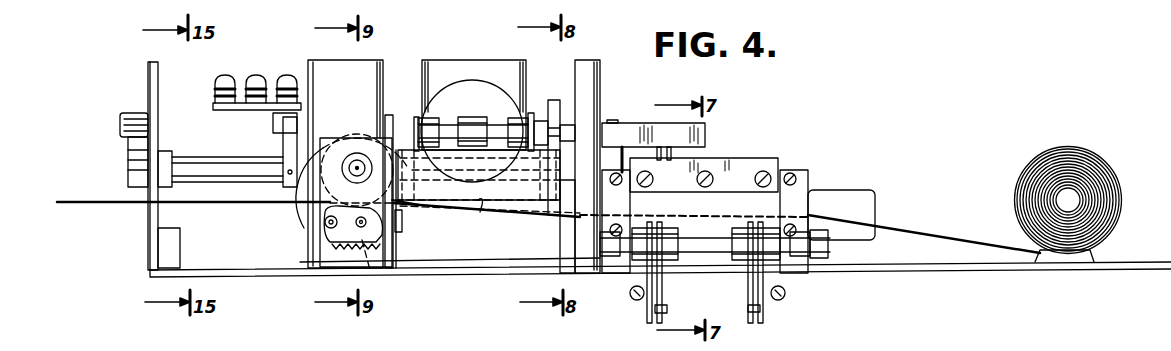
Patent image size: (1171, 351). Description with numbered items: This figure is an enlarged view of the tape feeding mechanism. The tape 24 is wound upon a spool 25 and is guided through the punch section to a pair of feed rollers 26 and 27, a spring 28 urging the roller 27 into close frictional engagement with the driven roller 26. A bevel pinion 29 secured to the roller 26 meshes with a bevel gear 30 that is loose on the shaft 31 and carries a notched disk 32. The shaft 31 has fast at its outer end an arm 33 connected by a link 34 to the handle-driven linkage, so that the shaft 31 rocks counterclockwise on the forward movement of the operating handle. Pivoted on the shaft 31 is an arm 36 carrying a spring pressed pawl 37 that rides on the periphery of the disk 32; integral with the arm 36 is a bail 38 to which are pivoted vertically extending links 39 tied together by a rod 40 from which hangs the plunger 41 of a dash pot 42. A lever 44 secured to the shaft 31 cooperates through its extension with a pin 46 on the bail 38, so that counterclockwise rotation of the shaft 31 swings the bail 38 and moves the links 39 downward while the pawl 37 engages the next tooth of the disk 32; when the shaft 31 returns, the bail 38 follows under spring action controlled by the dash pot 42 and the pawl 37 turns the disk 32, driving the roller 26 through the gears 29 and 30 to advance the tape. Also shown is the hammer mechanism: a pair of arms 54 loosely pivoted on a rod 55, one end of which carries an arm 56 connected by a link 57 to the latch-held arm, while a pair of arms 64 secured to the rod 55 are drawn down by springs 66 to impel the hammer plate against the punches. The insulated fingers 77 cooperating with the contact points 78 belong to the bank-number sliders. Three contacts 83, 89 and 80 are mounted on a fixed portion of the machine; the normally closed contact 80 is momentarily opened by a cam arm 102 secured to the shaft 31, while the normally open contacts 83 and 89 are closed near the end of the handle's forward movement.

The tape 24 is at (946, 232).
The spool 25 is at (1072, 200).
The feed roller 26 is at (358, 136).
The feed roller 27 is at (368, 242).
The spring 28 is at (348, 240).
The bevel pinion 29 is at (345, 180).
The bevel gear 30 is at (368, 112).
The shaft 31 is at (186, 168).
The notched disk 32 is at (389, 118).
The arm 33 is at (138, 150).
The link 34 is at (120, 125).
The arm 36 is at (404, 216).
The spring pressed pawl 37 is at (396, 234).
The bail 38 is at (479, 214).
The links 39 is at (416, 116).
The rod 40 is at (444, 128).
The plunger 41 is at (477, 126).
The dash pot 42 is at (495, 70).
The lever 44 is at (550, 200).
The pin 46 is at (556, 102).
The arms 54 is at (747, 282).
The rod 55 is at (699, 246).
The arm 56 is at (572, 248).
The link 57 is at (565, 126).
The arms 64 is at (647, 320).
The springs 66 is at (630, 294).
The insulated fingers 77 is at (672, 113).
The contact points 78 is at (378, 335).
The contact 80 is at (287, 76).
The contact 83 is at (218, 82).
The contact 89 is at (256, 76).
The cam arm 102 is at (288, 150).